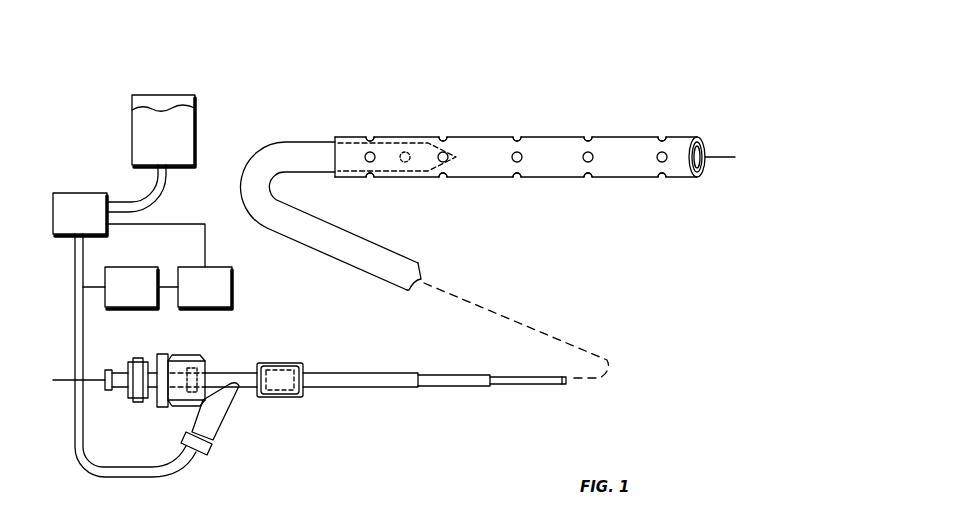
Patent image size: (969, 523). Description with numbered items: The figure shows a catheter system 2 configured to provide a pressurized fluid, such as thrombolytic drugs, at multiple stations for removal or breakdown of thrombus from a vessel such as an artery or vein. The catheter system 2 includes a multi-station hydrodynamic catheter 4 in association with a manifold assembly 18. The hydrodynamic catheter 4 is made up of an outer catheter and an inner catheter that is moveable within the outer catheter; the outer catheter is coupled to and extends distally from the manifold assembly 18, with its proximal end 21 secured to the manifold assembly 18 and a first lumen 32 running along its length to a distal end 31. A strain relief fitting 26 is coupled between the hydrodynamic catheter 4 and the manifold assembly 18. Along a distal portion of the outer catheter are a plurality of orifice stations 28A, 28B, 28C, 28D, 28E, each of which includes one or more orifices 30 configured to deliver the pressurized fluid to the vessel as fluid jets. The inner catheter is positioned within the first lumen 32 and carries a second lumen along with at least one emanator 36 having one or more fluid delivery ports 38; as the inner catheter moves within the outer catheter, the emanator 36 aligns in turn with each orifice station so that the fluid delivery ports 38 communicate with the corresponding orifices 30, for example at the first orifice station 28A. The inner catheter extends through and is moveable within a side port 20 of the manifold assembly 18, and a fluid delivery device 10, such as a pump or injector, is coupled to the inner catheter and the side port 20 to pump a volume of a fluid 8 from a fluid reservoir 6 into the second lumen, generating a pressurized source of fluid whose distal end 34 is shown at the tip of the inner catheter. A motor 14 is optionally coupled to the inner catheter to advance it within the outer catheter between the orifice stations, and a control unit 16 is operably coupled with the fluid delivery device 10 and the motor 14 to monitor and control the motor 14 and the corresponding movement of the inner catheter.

The catheter system 2 is at (138, 54).
The multi-station hydrodynamic catheter 4 is at (504, 117).
The fluid reservoir 6 is at (170, 95).
The fluid 8 is at (143, 131).
The fluid delivery device 10 is at (93, 193).
The motor 14 is at (135, 309).
The control unit 16 is at (207, 309).
The manifold assembly 18 is at (266, 423).
The side port 20 is at (212, 448).
The proximal end 21 is at (429, 410).
The strain relief fitting 26 is at (341, 390).
The first orifice station 28A is at (374, 198).
The orifice station 28B is at (446, 196).
The orifice station 28C is at (519, 195).
The orifice station 28D is at (591, 195).
The orifice station 28E is at (666, 195).
The orifices 30 is at (370, 179).
The distal end 31 is at (713, 214).
The first lumen 32 is at (701, 166).
The second lumen 34 is at (565, 386).
The emanator 36 is at (409, 169).
The fluid delivery ports 38 is at (405, 141).